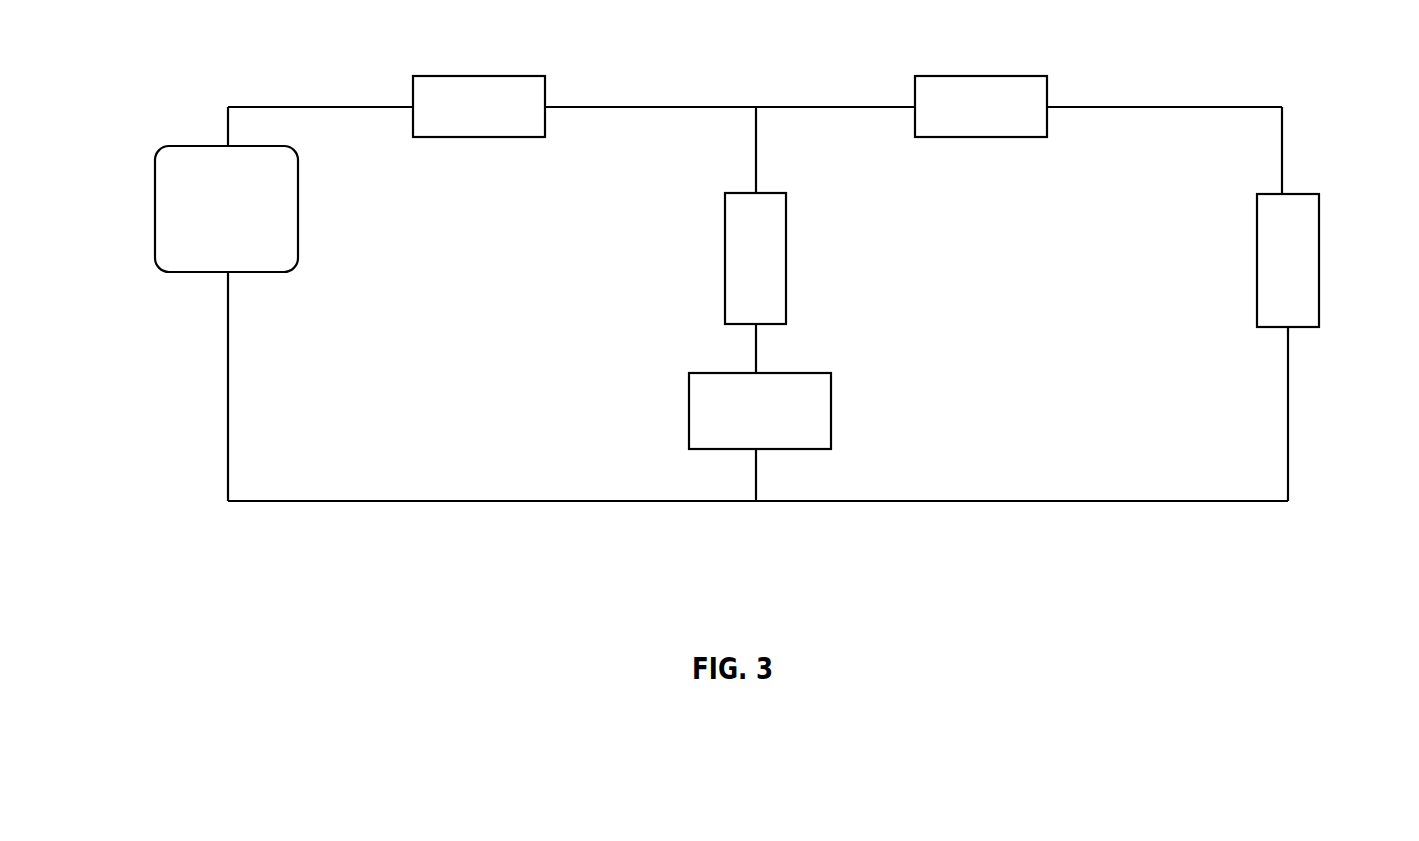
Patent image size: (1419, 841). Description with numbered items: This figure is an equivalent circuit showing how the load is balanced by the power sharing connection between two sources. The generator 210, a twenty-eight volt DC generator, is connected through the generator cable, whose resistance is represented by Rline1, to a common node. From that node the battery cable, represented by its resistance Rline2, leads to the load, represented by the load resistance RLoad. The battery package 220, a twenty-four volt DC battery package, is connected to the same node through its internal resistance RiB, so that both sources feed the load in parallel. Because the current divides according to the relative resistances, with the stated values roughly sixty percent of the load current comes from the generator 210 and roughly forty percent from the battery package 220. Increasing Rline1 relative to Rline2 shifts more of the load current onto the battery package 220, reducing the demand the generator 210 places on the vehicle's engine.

The generator 210 is at (168, 229).
The battery package 220 is at (822, 413).
The resistance of the generator cable Rline1 is at (479, 81).
The resistance of the battery cable Rline2 is at (981, 82).
The internal resistance of the battery RiB is at (780, 258).
The resistance of the load RLoad is at (1330, 260).